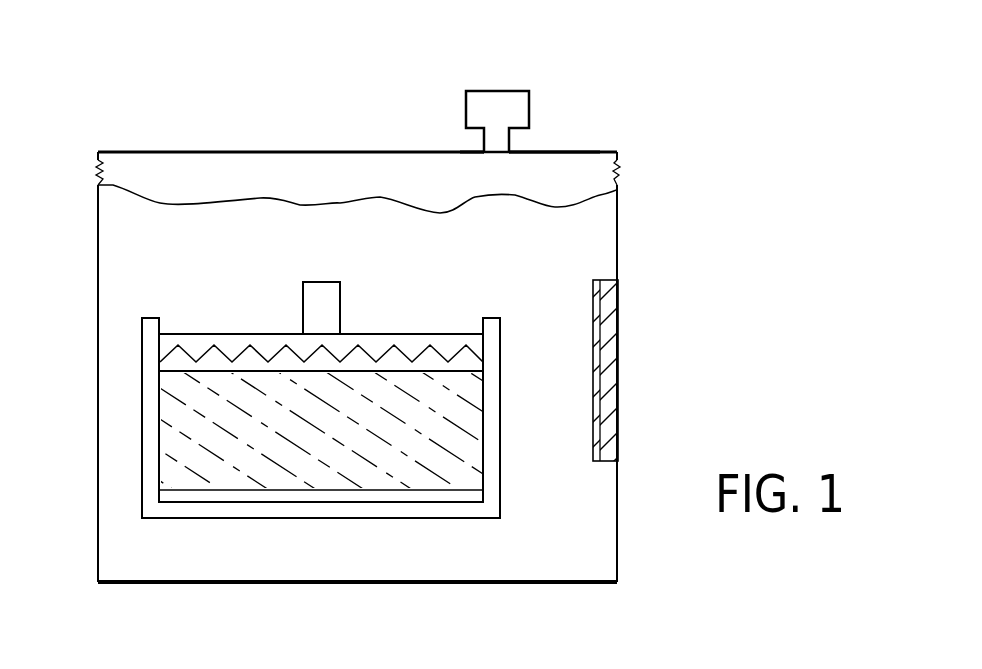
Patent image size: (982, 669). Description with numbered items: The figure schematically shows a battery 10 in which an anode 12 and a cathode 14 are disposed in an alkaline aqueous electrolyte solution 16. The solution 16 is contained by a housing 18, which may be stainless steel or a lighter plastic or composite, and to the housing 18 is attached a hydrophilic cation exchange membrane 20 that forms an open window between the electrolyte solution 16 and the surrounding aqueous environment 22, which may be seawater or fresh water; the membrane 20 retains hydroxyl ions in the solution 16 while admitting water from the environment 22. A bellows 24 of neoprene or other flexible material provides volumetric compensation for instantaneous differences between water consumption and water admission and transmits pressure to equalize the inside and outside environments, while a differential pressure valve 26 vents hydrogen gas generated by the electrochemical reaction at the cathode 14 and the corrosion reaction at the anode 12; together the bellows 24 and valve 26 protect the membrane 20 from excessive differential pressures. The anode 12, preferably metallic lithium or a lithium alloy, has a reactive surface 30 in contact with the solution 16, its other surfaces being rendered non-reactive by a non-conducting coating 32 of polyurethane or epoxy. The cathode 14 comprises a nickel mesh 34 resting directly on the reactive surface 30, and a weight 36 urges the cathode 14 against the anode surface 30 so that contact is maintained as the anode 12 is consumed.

The battery 10 is at (292, 125).
The anode 12 is at (160, 438).
The cathode 14 is at (223, 340).
The alkaline aqueous electrolyte solution 16 is at (130, 555).
The housing 18 is at (300, 585).
The hydrophilic cation exchange membrane 20 is at (620, 393).
The aqueous environment 22 is at (686, 231).
The bellows 24 is at (617, 162).
The differential pressure valve 26 is at (500, 91).
The reactive surface 30 is at (297, 372).
The non-conducting coating 32 is at (142, 392).
The nickel mesh 34 is at (262, 355).
The weight 36 is at (340, 308).